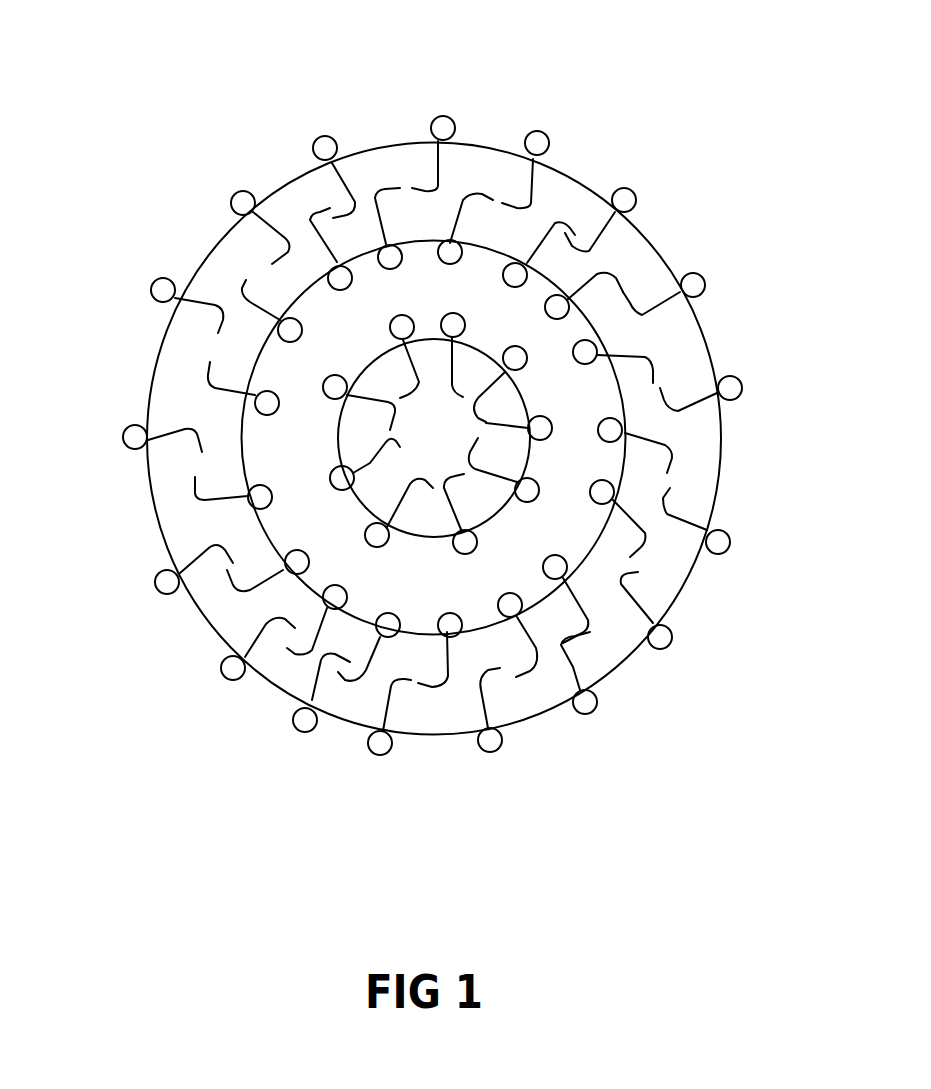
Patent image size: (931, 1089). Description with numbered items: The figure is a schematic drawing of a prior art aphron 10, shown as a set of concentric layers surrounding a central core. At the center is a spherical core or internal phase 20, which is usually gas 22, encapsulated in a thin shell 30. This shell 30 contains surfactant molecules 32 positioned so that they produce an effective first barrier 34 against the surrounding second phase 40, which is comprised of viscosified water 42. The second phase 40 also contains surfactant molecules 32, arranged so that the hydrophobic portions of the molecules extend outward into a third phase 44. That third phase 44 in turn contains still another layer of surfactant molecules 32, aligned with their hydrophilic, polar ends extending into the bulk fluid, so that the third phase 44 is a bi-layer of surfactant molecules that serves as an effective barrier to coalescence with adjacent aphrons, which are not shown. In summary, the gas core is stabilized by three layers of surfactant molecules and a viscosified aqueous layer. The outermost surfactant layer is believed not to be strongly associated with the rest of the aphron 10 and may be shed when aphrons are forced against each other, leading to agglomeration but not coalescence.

The aphron 10 is at (151, 113).
The internal phase 20 is at (337, 440).
The gas 22 is at (451, 448).
The shell 30 is at (365, 504).
The surfactant molecules 32 is at (378, 540).
The first barrier 34 is at (553, 417).
The second phase 40 is at (493, 248).
The viscosified water 42 is at (438, 596).
The third phase 44 is at (605, 625).